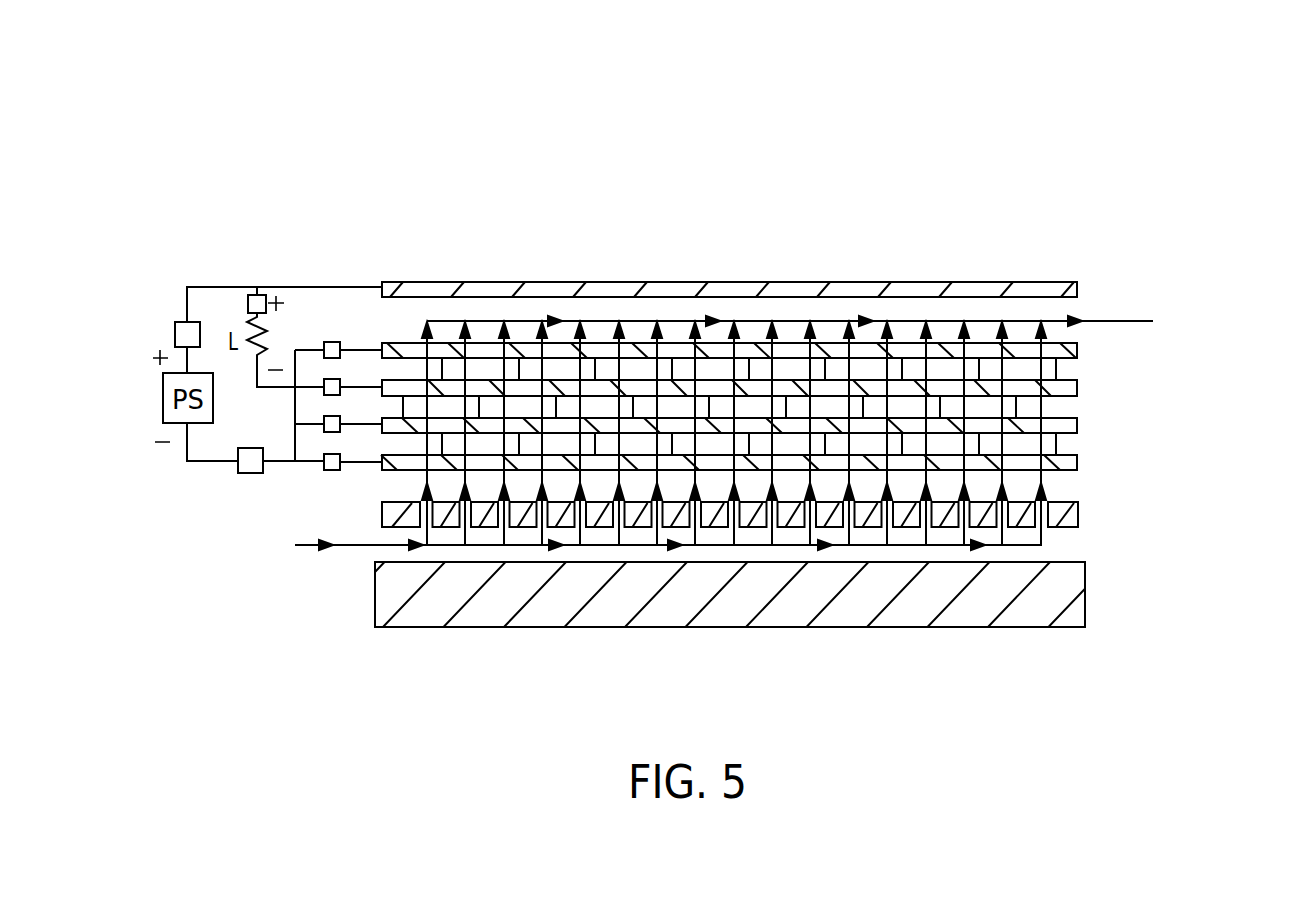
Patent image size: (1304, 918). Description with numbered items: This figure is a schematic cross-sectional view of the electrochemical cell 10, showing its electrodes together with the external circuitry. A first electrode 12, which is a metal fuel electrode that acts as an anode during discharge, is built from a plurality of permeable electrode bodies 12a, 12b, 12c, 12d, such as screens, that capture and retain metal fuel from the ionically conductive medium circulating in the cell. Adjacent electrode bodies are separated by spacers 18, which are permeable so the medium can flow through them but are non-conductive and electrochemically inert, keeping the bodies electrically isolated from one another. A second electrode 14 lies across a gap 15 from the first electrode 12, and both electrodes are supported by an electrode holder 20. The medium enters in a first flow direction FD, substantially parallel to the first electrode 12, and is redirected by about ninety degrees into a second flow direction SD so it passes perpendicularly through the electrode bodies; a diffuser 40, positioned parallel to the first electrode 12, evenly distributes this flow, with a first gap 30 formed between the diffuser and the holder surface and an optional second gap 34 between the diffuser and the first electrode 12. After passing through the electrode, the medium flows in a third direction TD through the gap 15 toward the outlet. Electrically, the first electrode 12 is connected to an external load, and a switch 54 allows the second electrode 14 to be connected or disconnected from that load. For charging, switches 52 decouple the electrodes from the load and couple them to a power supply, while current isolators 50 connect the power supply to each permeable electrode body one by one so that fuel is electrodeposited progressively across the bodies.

The electrochemical cell 10 is at (208, 127).
The first electrode 12 is at (840, 401).
The permeable electrode body 12a is at (1077, 462).
The permeable electrode body 12b is at (1077, 425).
The permeable electrode body 12c is at (1077, 388).
The permeable electrode body 12d is at (1077, 350).
The second electrode 14 is at (423, 282).
The gap 15 is at (797, 312).
The spacers 18 is at (1056, 368).
The electrode holder 20 is at (1075, 585).
The first gap 30 is at (1057, 548).
The second gap 34 is at (1065, 488).
The diffuser 40 is at (1078, 513).
The current isolators 50 is at (331, 342).
The switches 52 is at (180, 330).
The switch 54 is at (250, 287).
The third direction TD is at (1085, 318).
The first flow direction FD is at (352, 547).
The second flow direction SD is at (503, 530).